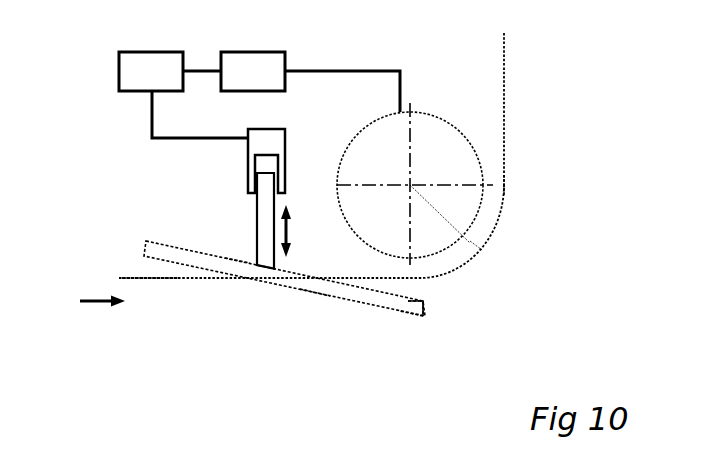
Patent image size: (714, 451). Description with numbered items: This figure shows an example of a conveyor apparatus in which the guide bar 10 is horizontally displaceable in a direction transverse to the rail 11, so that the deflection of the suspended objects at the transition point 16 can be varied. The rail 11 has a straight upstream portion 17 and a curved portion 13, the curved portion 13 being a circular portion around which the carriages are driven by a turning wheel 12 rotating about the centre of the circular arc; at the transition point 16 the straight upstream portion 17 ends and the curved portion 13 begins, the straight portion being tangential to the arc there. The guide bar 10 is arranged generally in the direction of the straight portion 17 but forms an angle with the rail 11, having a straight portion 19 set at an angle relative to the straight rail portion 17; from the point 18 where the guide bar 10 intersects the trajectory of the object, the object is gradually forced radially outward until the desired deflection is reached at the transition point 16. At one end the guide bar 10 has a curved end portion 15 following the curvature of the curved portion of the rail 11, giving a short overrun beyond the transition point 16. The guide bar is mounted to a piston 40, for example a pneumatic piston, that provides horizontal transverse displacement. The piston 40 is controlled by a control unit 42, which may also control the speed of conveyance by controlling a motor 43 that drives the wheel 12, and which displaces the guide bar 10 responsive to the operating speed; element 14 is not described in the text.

The guide bar 10 is at (199, 248).
The rail 11 is at (504, 65).
The turning wheel 12 is at (368, 120).
The curved portion 13 is at (483, 252).
The guide wall inner surface 14 is at (508, 181).
The curved end portion 15 is at (410, 320).
The transition point 16 is at (420, 279).
The straight upstream portion 17 is at (151, 283).
The intersection point 18 is at (237, 280).
The straight portion of the guide bar 19 is at (315, 285).
The piston 40 is at (263, 220).
The control unit 42 is at (135, 72).
The motor 43 is at (255, 73).